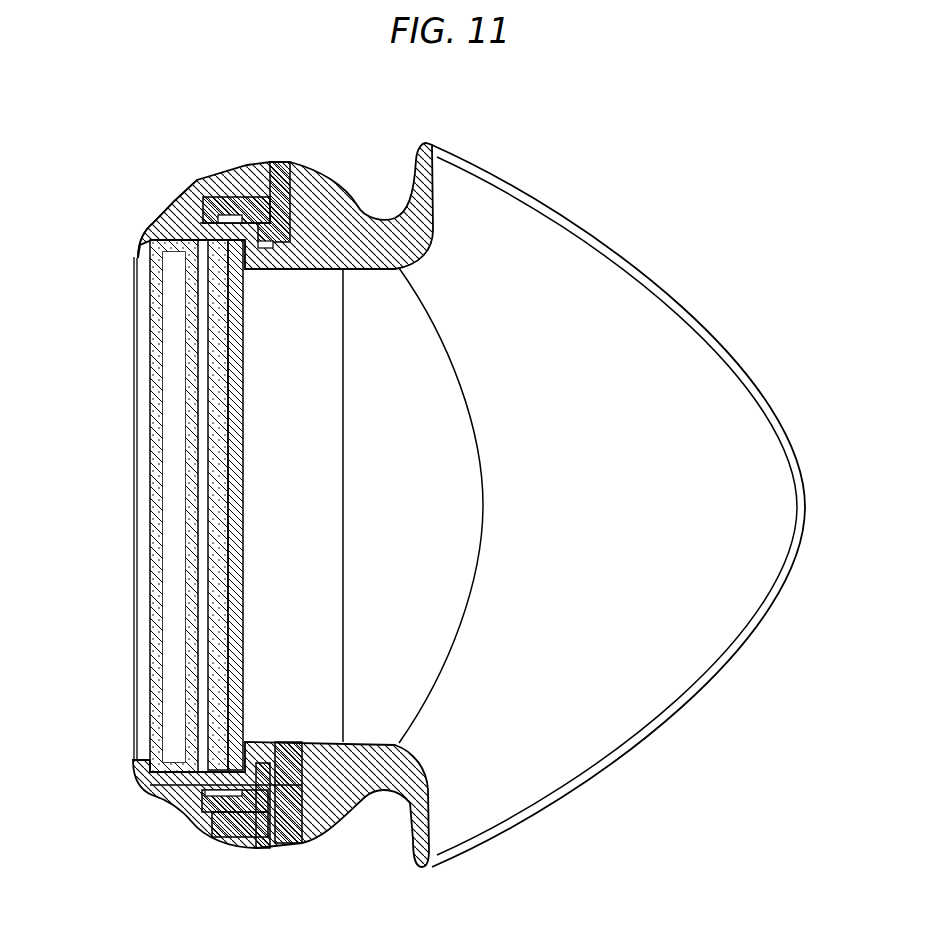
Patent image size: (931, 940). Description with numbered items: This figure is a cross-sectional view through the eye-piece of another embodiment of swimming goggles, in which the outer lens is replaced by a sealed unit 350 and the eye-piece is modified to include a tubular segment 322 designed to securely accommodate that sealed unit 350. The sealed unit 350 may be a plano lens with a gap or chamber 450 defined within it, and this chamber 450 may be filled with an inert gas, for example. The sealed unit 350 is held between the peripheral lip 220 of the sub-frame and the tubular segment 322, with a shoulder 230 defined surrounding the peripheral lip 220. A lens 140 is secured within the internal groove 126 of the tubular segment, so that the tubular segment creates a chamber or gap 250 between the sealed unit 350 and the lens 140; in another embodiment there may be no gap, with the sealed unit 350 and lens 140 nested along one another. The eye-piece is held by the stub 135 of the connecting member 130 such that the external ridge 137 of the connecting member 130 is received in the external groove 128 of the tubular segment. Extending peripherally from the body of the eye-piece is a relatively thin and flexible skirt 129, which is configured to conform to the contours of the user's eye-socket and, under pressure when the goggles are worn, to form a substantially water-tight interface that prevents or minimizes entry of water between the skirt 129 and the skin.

The internal groove 126 is at (200, 222).
The external groove 128 is at (268, 720).
The skirt 129 is at (676, 598).
The connecting member 130 is at (280, 185).
The stub 135 is at (245, 200).
The external ridge 137 is at (277, 235).
The lens 140 is at (248, 668).
The peripheral lip 220 is at (137, 250).
The shoulder 230 is at (216, 798).
The gap 250 is at (206, 636).
The tubular segment 322 is at (192, 222).
The sealed unit 350 is at (150, 592).
The gap or chamber 450 is at (176, 722).